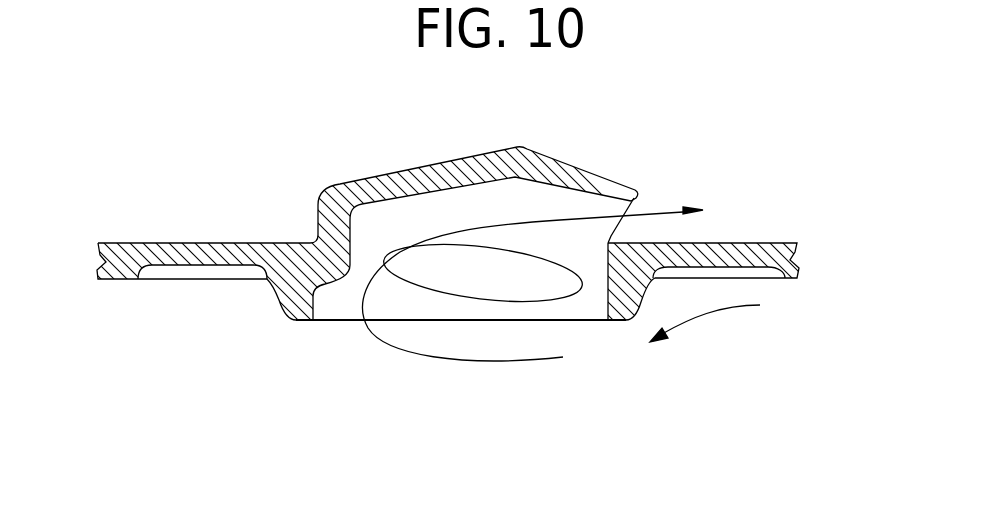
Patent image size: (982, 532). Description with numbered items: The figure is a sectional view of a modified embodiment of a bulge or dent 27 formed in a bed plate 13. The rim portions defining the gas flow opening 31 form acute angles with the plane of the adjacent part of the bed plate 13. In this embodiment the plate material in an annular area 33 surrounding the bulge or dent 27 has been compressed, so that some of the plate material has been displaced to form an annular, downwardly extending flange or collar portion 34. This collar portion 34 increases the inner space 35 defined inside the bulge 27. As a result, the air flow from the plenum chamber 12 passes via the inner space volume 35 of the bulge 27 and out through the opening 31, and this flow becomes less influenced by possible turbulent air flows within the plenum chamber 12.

The plenum chamber 12 is at (476, 354).
The bed plate 13 is at (781, 249).
The bulge or dent 27 is at (368, 240).
The gas flow opening 31 is at (633, 203).
The annular area 33 is at (238, 246).
The flange or collar portion 34 is at (292, 322).
The inner space 35 is at (513, 203).